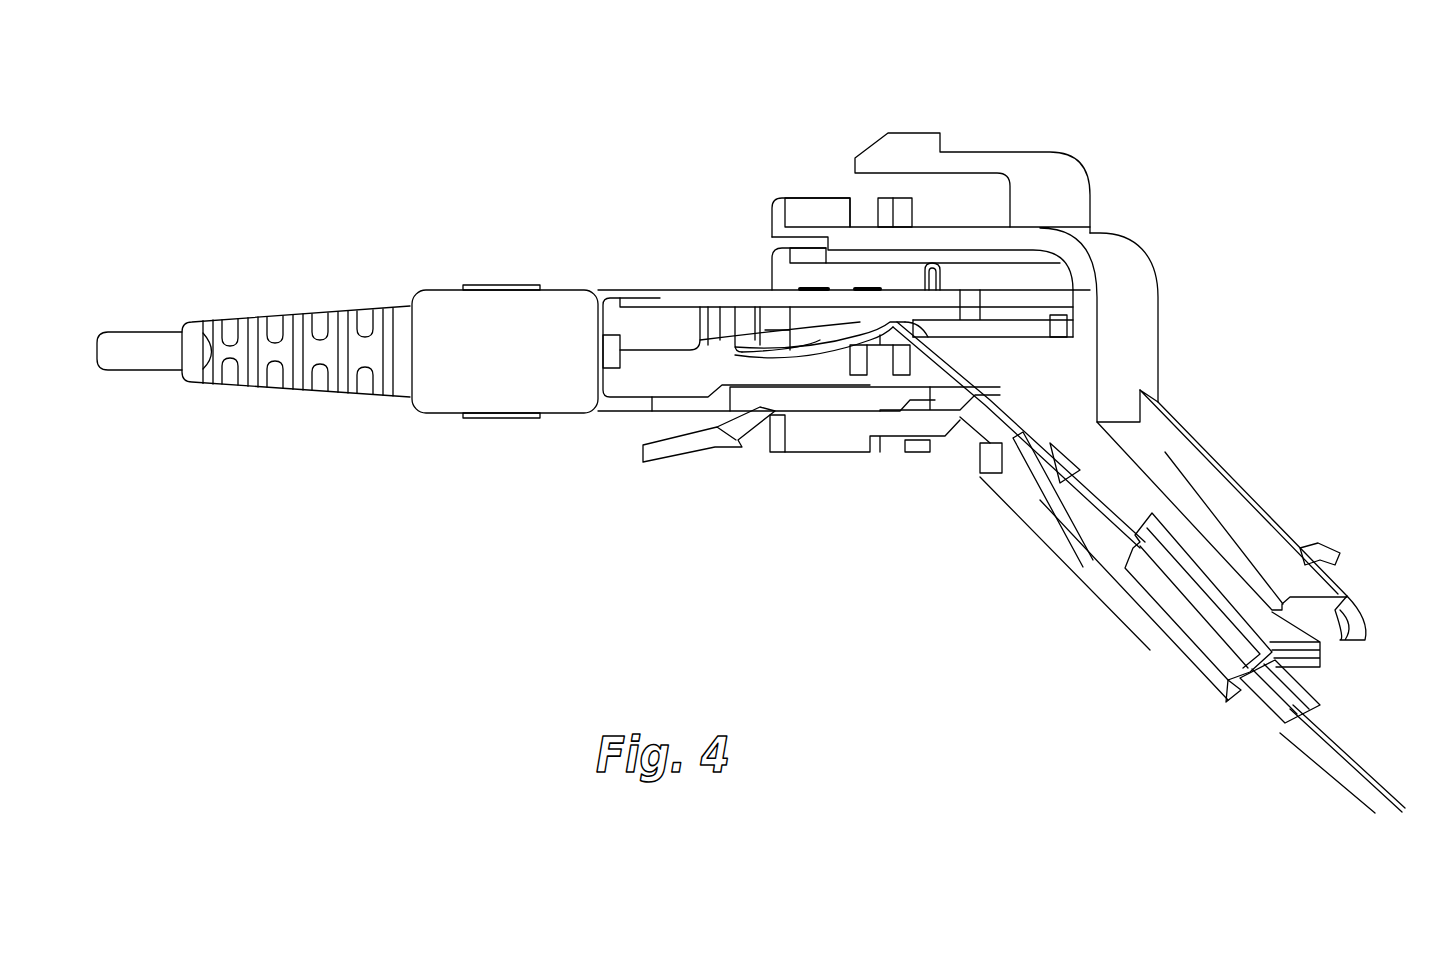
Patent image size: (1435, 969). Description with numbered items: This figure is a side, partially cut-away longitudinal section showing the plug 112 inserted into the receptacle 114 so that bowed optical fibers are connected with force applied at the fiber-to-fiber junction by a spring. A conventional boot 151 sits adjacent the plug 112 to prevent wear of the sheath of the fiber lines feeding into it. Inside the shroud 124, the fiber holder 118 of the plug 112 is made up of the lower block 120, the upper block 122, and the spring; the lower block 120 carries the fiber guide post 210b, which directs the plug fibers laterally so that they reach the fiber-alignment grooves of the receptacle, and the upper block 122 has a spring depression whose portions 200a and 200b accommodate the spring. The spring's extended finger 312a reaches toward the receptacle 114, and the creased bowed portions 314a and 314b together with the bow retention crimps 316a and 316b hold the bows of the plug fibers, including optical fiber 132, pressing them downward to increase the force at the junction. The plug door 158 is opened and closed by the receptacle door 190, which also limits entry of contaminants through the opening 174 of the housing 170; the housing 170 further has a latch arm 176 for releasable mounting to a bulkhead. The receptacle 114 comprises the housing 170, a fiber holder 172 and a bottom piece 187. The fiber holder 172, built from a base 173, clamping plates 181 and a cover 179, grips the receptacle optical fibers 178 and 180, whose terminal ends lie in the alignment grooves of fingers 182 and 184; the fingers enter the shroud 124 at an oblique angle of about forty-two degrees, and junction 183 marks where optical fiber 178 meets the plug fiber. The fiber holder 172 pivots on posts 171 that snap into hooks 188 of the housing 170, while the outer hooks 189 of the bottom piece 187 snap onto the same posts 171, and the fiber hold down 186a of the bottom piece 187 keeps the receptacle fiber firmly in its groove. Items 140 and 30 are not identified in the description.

The plug 112 is at (492, 198).
The receptacle 114 is at (1170, 240).
The fiber holder 118 is at (622, 355).
The lower block 120 is at (600, 390).
The upper block 122 is at (637, 318).
The shroud 124 is at (640, 310).
The optical fiber 132 is at (928, 337).
The latch lever 140 is at (670, 457).
The boot 151 is at (283, 392).
The door 158 is at (1060, 300).
The housing 170 is at (1140, 313).
The posts 171 is at (1340, 582).
The fiber holder 172 is at (1232, 742).
The base 173 is at (1240, 701).
The opening 174 is at (795, 289).
The latch arm 176 is at (963, 152).
The optical fiber 178 is at (1330, 772).
The cover 179 is at (1200, 653).
The optical fiber 180 is at (1355, 757).
The clamping plates 181 is at (1225, 651).
The finger 182 is at (1020, 405).
The junction 183 is at (1007, 435).
The finger 184 is at (1047, 477).
The fiber hold down 186a is at (978, 441).
The bottom piece 187 is at (880, 462).
The hooks 188 is at (1332, 644).
The outer hooks 189 is at (1365, 630).
The receptacle door 190 is at (848, 264).
The spring depression portion 200a is at (712, 352).
The spring depression portion 200b is at (752, 318).
The fiber guide post 210b is at (882, 402).
The ferrule 30 is at (865, 366).
The extended finger 312a is at (722, 350).
The bowed portion 314a is at (840, 276).
The bowed portion 314b is at (915, 297).
The bow retention crimp 316a is at (893, 320).
The bow retention crimp 316b is at (948, 322).